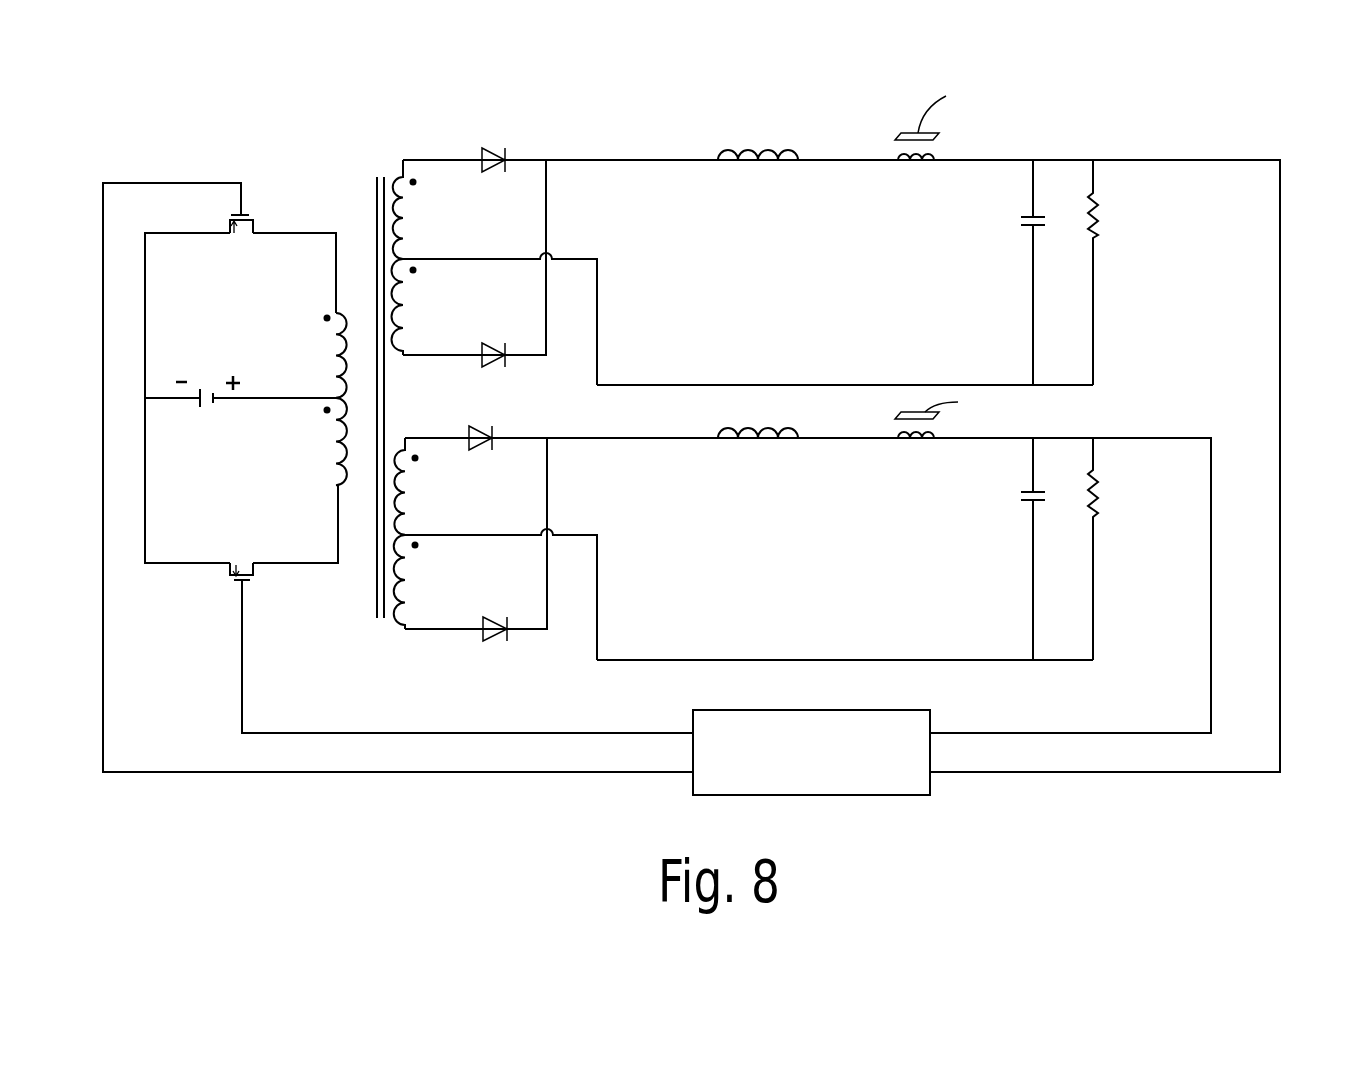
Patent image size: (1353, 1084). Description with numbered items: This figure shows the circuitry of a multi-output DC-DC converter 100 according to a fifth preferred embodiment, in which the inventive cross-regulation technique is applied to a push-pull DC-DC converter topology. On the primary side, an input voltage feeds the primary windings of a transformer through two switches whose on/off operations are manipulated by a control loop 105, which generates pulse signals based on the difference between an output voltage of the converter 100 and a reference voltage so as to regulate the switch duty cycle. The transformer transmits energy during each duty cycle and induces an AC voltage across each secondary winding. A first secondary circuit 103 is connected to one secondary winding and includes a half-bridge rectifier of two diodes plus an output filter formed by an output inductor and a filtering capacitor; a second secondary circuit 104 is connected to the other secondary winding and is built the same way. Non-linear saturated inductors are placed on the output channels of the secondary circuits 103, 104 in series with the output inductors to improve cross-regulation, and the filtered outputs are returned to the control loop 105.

The multi-output DC-DC converter 100 is at (1334, 112).
The first secondary circuit 103 is at (535, 153).
The second secondary circuit 104 is at (535, 430).
The control loop 105 is at (705, 723).